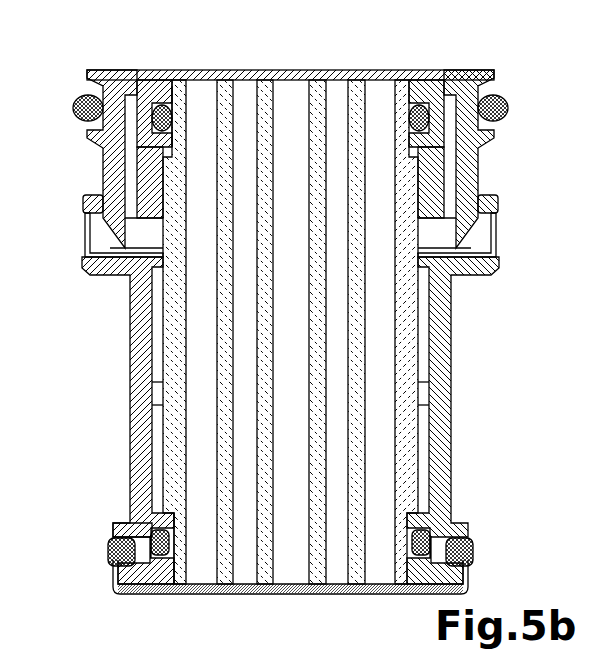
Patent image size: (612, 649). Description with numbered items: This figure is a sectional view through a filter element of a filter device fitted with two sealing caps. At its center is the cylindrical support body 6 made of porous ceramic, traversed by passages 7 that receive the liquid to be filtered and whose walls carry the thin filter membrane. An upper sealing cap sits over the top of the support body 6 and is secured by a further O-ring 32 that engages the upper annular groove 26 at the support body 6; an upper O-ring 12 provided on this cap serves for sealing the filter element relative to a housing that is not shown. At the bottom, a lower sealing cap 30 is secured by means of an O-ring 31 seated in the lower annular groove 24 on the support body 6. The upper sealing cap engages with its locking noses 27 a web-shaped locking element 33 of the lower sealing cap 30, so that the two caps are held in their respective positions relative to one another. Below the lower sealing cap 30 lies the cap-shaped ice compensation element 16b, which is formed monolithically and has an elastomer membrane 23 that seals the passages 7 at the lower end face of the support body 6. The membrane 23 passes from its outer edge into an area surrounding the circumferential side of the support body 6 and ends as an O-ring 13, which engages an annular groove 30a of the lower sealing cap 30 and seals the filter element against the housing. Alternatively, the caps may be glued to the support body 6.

The support body 6 is at (400, 343).
The passages 7 is at (387, 211).
The upper O-ring 12 is at (508, 108).
The O-ring 13 is at (108, 552).
The lower cap-shaped ice compensation element 16b is at (302, 598).
The elastomer membrane 23 is at (256, 594).
The lower annular groove 24 is at (182, 533).
The upper annular groove 26 is at (186, 123).
The locking noses 27 is at (85, 228).
The lower sealing cap 30 is at (445, 447).
The annular groove 30a is at (100, 535).
The O-ring 31 is at (160, 556).
The further O-ring 32 is at (162, 104).
The web-shaped locking element 33 is at (500, 205).